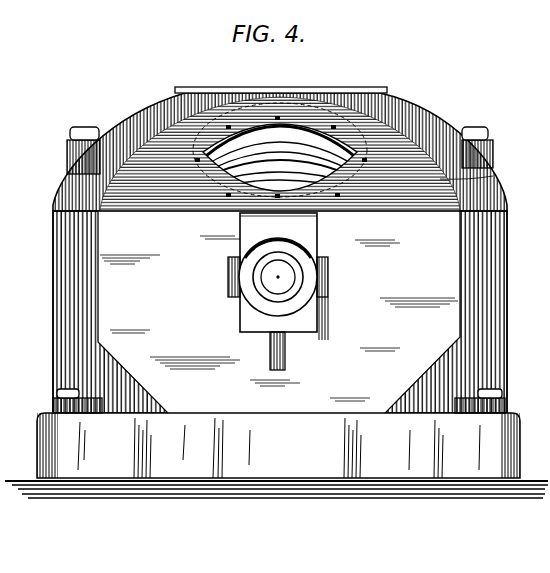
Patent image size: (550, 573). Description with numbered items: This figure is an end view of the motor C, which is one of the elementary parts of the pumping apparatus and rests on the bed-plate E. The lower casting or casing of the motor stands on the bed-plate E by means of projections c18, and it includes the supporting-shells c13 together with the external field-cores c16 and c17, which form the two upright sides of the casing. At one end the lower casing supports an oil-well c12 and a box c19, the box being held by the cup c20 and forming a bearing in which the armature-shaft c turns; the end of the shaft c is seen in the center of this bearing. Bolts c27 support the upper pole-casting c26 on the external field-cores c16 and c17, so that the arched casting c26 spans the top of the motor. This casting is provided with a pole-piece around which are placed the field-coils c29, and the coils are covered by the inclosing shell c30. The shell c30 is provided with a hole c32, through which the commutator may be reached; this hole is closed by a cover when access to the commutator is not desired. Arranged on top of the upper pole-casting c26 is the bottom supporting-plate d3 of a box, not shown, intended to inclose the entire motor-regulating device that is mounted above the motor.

The motor C is at (275, 247).
The bed-plate E is at (34, 438).
The armature-shaft c is at (272, 276).
The bottom supporting-plate d3 is at (297, 91).
The oil-well c12 is at (280, 291).
The supporting-shells c13 is at (279, 312).
The external field-core c16 is at (500, 312).
The external field-core c17 is at (52, 256).
The projections c18 is at (508, 410).
The box c19 is at (295, 299).
The cup c20 is at (300, 249).
The upper pole-casting c26 is at (411, 104).
The bolts c27 is at (472, 136).
The field-coils c29 is at (247, 187).
The inclosing shell c30 is at (150, 156).
The hole c32 is at (263, 106).